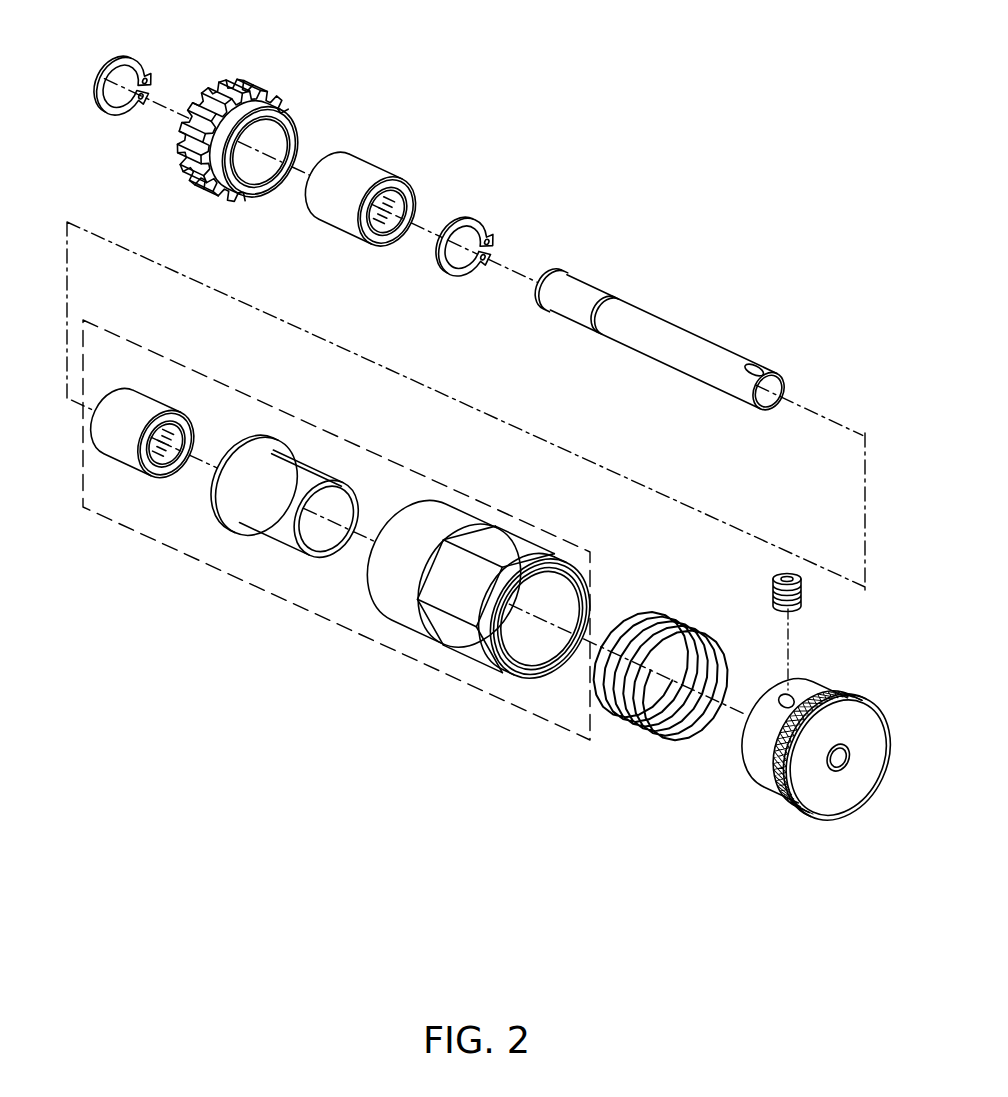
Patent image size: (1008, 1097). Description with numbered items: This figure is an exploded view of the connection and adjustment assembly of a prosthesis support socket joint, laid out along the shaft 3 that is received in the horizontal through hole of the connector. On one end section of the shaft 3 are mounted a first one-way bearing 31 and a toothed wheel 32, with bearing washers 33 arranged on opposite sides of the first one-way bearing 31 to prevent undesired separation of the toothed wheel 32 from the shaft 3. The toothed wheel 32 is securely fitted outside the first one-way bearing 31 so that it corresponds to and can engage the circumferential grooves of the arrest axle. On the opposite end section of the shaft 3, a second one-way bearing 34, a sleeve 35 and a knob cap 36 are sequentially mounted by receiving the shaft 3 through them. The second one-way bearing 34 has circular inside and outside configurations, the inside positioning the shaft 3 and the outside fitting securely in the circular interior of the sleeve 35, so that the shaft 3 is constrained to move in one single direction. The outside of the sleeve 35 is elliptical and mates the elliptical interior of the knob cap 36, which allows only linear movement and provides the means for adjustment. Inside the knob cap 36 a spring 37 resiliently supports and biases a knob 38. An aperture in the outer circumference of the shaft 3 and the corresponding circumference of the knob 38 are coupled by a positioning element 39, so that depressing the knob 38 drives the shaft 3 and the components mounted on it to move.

The shaft 3 is at (675, 333).
The first one-way bearing 31 is at (362, 172).
The toothed wheel 32 is at (273, 110).
The bearing washers 33 is at (132, 60).
The second one-way bearing 34 is at (133, 462).
The sleeve 35 is at (285, 552).
The knob cap 36 is at (472, 653).
The spring 37 is at (633, 713).
The knob 38 is at (765, 767).
The positioning element 39 is at (805, 593).